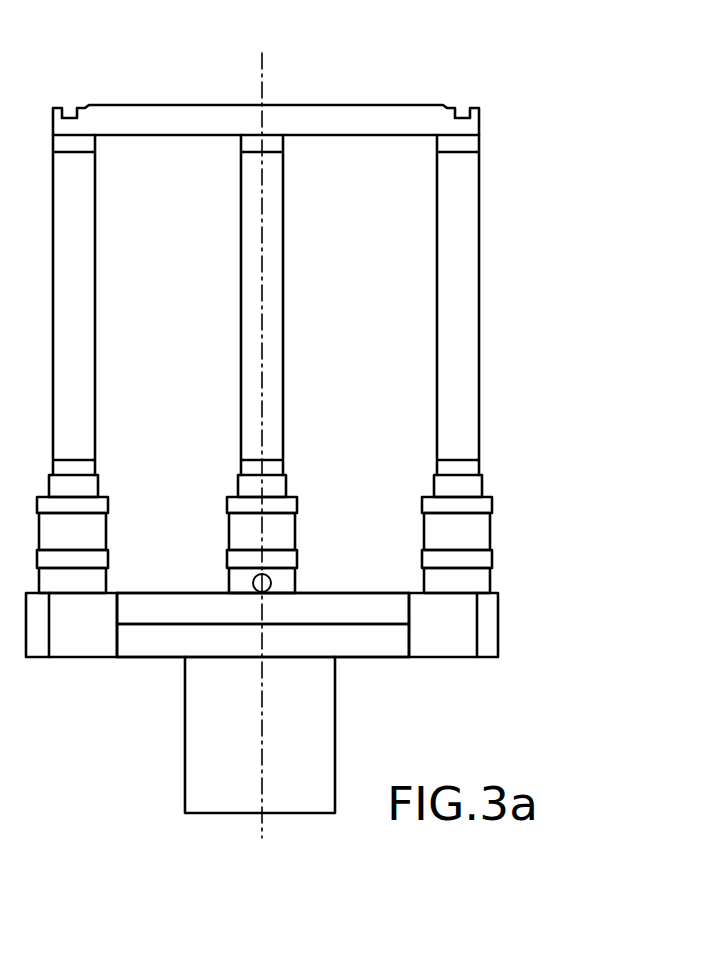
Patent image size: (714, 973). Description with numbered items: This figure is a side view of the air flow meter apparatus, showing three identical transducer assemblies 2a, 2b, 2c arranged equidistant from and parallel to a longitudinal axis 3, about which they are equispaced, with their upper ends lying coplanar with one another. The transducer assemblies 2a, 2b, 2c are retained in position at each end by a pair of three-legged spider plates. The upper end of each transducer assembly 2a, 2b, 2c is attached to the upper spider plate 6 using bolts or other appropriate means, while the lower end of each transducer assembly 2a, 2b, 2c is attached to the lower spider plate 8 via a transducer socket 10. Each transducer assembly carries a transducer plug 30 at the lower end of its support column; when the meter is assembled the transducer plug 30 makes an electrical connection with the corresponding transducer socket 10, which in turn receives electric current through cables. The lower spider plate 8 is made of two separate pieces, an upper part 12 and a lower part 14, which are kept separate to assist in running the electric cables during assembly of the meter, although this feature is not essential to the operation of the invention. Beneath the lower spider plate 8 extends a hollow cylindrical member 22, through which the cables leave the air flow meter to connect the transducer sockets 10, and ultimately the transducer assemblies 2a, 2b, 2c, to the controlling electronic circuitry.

The longitudinal axis 3 is at (262, 68).
The upper spider plate 6 is at (398, 113).
The transducer assembly 2a is at (277, 177).
The transducer assembly 2b is at (80, 178).
The transducer assembly 2c is at (463, 177).
The transducer plug 30 is at (477, 482).
The transducer socket 10 is at (475, 543).
The upper part 12 is at (357, 607).
The lower part 14 is at (365, 647).
The lower spider plate 8 is at (285, 627).
The hollow cylindrical member 22 is at (200, 728).